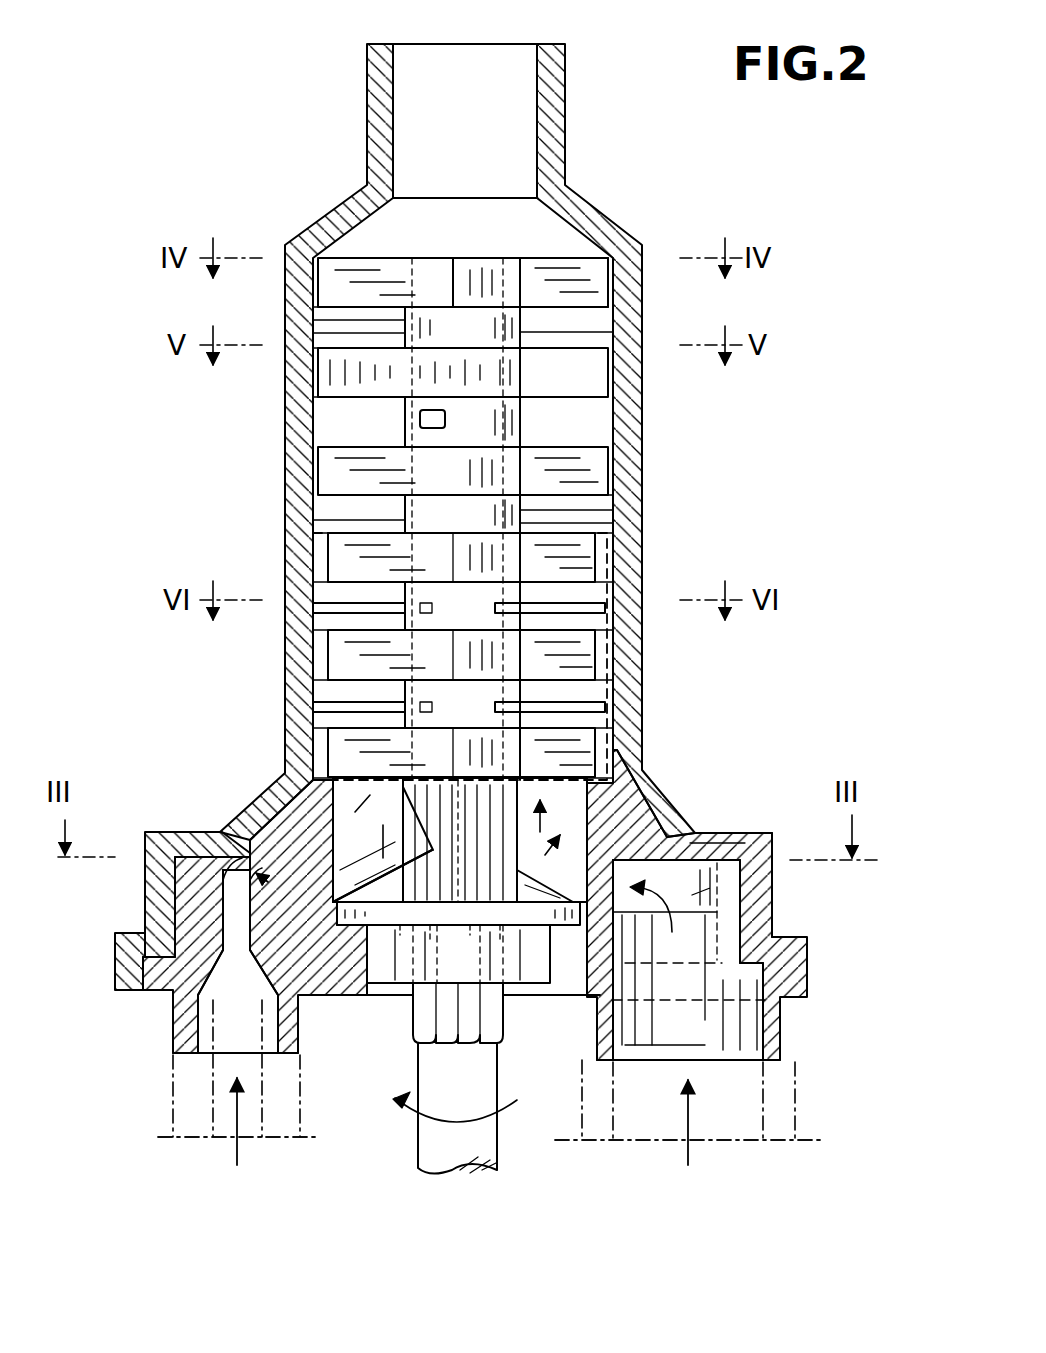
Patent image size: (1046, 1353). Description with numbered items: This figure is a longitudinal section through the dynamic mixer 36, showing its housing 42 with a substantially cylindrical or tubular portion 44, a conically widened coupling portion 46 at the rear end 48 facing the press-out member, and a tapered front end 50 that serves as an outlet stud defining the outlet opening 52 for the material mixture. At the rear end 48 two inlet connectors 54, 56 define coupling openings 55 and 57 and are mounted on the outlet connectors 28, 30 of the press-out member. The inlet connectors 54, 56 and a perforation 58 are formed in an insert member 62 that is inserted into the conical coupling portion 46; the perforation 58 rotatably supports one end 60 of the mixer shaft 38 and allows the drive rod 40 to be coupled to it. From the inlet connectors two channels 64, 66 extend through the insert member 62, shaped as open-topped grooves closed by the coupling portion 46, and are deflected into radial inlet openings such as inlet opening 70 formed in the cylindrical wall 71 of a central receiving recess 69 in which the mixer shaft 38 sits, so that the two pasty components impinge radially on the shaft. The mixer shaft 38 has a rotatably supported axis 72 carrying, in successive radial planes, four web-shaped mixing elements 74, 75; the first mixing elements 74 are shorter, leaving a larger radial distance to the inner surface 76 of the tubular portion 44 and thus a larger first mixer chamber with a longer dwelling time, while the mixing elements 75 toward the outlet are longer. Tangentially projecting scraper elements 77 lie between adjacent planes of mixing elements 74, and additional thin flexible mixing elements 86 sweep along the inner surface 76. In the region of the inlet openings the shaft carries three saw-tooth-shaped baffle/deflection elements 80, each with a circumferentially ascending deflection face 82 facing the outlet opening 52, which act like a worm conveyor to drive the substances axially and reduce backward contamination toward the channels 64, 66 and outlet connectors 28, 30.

The outlet connector 28 is at (780, 1105).
The outlet connector 30 is at (277, 1138).
The dynamic mixer 36 is at (320, 110).
The mixer shaft 38 is at (612, 628).
The drive rod 40 is at (441, 1160).
The housing 42 is at (670, 182).
The cylindrical portion 44 is at (625, 425).
The coupling portion 46 is at (730, 847).
The rear end 48 is at (824, 955).
The front end 50 is at (557, 92).
The outlet opening 52 is at (490, 75).
The inlet connector 54 is at (792, 1040).
The coupling opening 55 is at (697, 1048).
The inlet connector 56 is at (182, 1022).
The coupling opening 57 is at (222, 1082).
The perforation 58 is at (538, 958).
The end of mixer shaft 60 is at (402, 965).
The insert member 62 is at (315, 960).
The channel 64 is at (702, 903).
The channel 66 is at (258, 835).
The receiving recess 69 is at (233, 843).
The inlet opening 70 is at (428, 800).
The cylindrical wall 71 is at (247, 847).
The axis 72 is at (480, 332).
The mixing element 74 is at (562, 555).
The mixing element 75 is at (565, 285).
The inner surface 76 is at (330, 415).
The scraper element 77 is at (330, 603).
The baffle/deflection element 80 is at (657, 853).
The deflection face 82 is at (313, 690).
The mixing element 86 is at (330, 325).